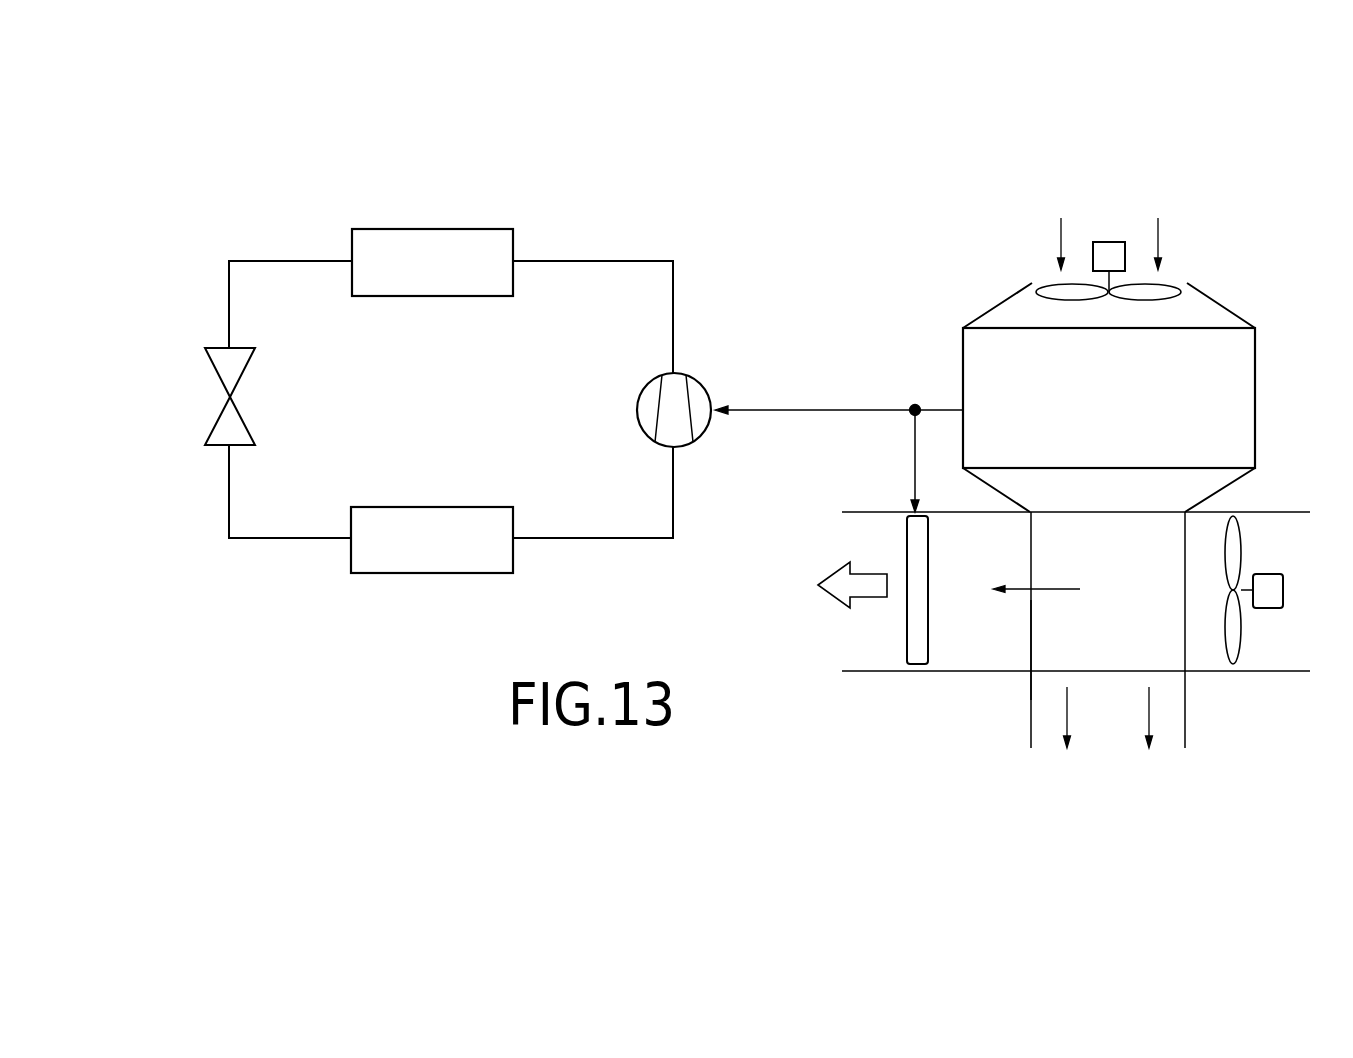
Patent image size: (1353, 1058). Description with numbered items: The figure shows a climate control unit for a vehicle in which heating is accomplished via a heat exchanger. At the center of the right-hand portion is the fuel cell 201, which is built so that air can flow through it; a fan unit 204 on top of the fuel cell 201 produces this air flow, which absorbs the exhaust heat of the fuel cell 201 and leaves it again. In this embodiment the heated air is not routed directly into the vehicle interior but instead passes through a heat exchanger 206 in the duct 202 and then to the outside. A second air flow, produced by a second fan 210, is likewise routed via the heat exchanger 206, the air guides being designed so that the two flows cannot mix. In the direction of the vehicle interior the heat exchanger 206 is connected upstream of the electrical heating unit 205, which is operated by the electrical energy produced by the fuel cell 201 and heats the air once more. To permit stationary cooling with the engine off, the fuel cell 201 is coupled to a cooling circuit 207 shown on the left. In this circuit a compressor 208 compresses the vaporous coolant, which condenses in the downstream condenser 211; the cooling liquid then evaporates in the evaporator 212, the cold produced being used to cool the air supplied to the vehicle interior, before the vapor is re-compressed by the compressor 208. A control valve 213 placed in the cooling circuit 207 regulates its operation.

The fuel cell 201 is at (1256, 394).
The air duct 202 is at (1284, 722).
The fan unit 204 is at (1168, 283).
The electrical heating unit 205 is at (907, 627).
The heat exchanger 206 is at (1048, 643).
The cooling circuit 207 is at (678, 228).
The compressor 208 is at (700, 378).
The second fan 210 is at (1242, 632).
The condenser 211 is at (443, 229).
The evaporator 212 is at (438, 507).
The control valve 213 is at (218, 405).